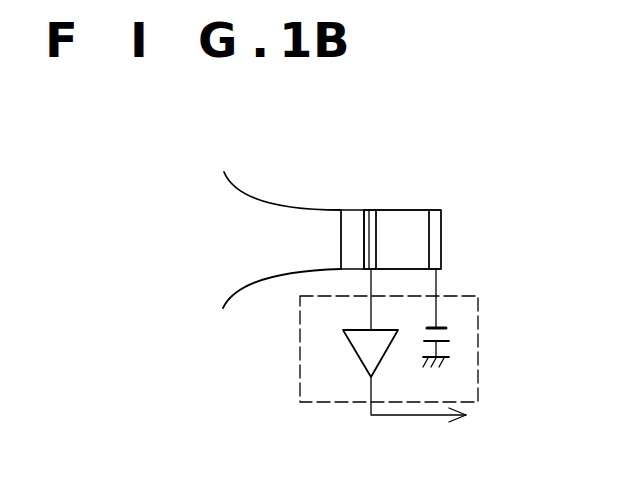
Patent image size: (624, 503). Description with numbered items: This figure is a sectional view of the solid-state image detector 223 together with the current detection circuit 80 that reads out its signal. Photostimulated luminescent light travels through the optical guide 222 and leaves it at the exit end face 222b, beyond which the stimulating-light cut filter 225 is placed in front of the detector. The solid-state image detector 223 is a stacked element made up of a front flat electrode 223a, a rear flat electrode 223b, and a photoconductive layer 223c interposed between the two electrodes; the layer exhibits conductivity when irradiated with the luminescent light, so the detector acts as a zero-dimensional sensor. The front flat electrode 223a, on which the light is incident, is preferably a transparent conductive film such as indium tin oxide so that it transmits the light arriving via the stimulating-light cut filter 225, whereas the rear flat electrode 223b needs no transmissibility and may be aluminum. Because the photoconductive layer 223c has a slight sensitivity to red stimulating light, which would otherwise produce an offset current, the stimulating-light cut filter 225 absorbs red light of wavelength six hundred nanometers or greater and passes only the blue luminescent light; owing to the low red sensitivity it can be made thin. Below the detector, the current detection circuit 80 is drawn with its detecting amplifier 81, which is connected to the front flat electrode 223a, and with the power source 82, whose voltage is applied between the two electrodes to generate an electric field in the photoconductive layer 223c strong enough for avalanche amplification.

The optical guide 222 is at (235, 203).
The exit end face 222b is at (340, 224).
The solid-state image detector 223 is at (490, 151).
The front flat electrode 223a is at (370, 211).
The rear flat electrode 223b is at (433, 211).
The photoconductive layer 223c is at (412, 222).
The stimulating-light cut filter 225 is at (351, 223).
The current detection circuit 80 is at (479, 319).
The detecting amplifier 81 is at (368, 358).
The power source 82 is at (453, 346).